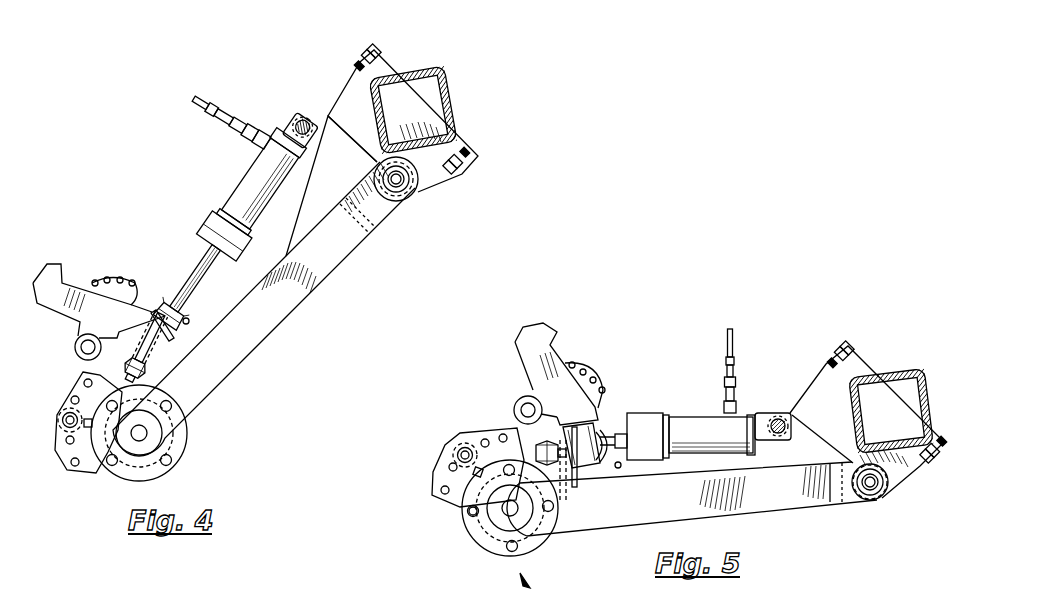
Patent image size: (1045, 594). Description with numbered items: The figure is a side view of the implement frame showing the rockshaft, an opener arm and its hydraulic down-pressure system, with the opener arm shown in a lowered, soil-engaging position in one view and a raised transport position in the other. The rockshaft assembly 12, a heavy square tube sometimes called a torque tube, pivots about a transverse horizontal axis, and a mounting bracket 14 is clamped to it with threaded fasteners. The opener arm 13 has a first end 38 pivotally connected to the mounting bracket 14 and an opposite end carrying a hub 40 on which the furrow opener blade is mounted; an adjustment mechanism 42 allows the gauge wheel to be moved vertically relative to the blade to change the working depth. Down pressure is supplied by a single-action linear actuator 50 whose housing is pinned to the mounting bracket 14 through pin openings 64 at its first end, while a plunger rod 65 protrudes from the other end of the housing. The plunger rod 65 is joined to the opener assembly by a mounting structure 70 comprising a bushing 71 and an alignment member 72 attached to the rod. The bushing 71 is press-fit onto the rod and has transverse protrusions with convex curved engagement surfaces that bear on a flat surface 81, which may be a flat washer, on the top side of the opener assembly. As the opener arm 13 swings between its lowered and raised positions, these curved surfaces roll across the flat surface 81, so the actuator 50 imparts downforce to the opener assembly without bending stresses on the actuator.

In FIG. 4, the rockshaft assembly 12 is at (452, 108).
In FIG. 5, the rockshaft assembly 12 is at (883, 380).
In FIG. 4, the opener arm 13 is at (320, 273).
In FIG. 5, the opener arm 13 is at (780, 500).
In FIG. 4, the mounting bracket 14 is at (338, 100).
In FIG. 5, the mounting bracket 14 is at (812, 395).
In FIG. 4, the first end 38 is at (400, 188).
In FIG. 5, the first end 38 is at (872, 487).
In FIG. 4, the hub 40 is at (177, 447).
In FIG. 5, the hub 40 is at (480, 542).
In FIG. 4, the adjustment mechanism 42 is at (83, 467).
In FIG. 5, the adjustment mechanism 42 is at (445, 478).
In FIG. 4, the linear actuator 50 is at (240, 186).
In FIG. 5, the linear actuator 50 is at (690, 420).
In FIG. 4, the pin openings 64 is at (300, 116).
In FIG. 5, the pin openings 64 is at (778, 418).
In FIG. 4, the plunger rod 65 is at (193, 270).
In FIG. 5, the plunger rod 65 is at (620, 436).
In FIG. 4, the mounting structure 70 is at (165, 313).
In FIG. 5, the mounting structure 70 is at (601, 446).
In FIG. 4, the bushing 71 is at (189, 323).
In FIG. 5, the bushing 71 is at (618, 468).
In FIG. 4, the alignment member 72 is at (140, 378).
In FIG. 5, the alignment member 72 is at (574, 470).
In FIG. 4, the flat surface 81 is at (172, 342).
In FIG. 5, the flat surface 81 is at (600, 433).